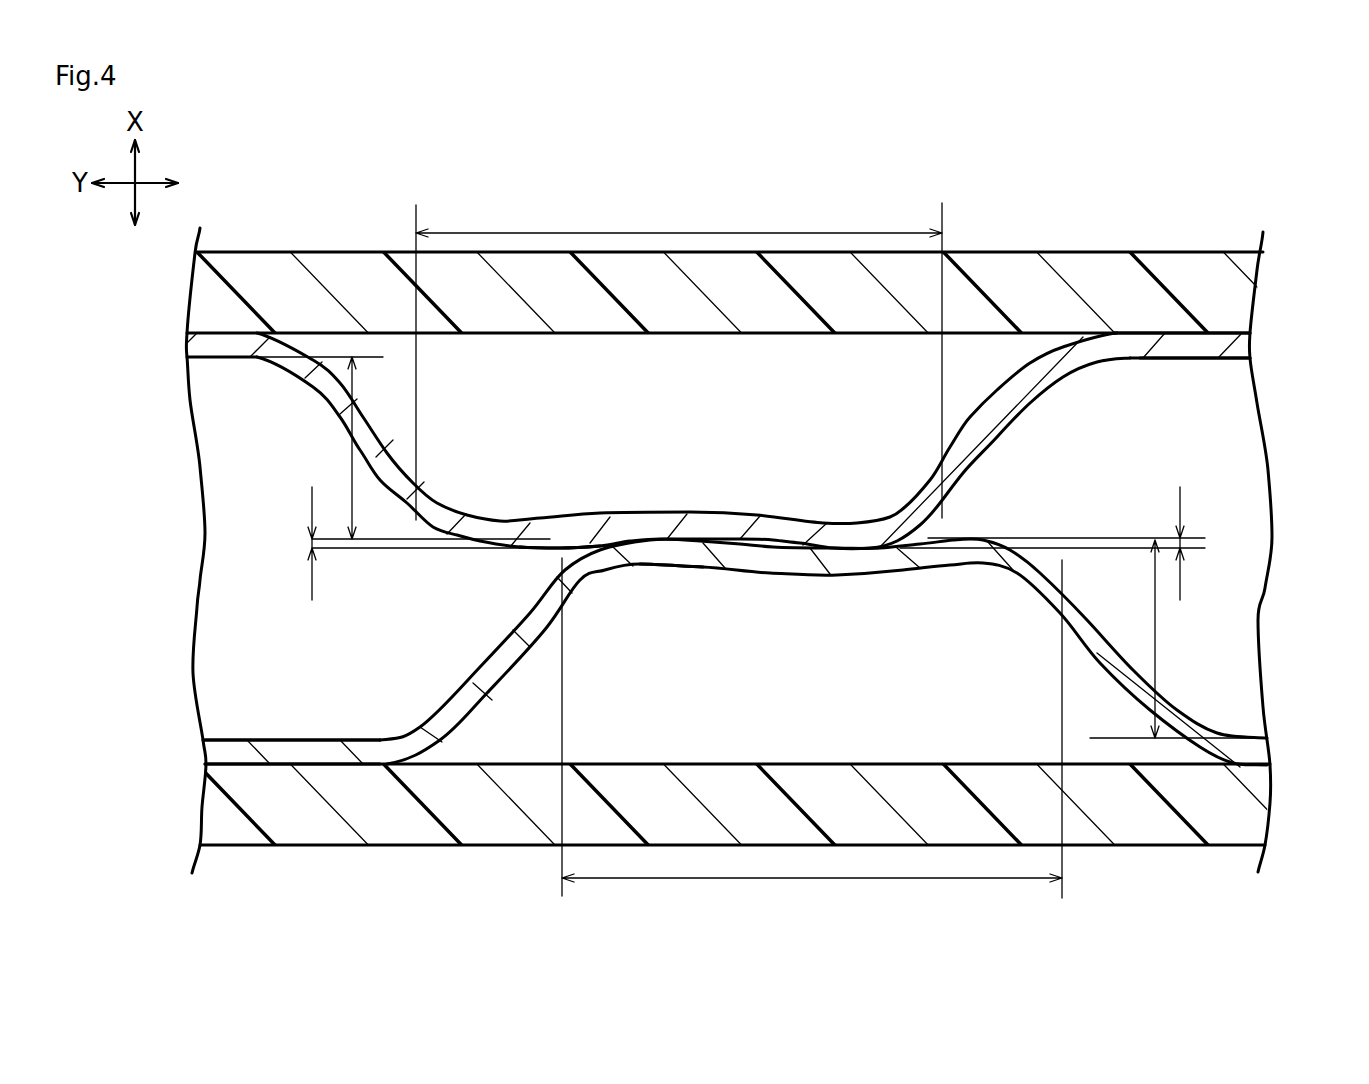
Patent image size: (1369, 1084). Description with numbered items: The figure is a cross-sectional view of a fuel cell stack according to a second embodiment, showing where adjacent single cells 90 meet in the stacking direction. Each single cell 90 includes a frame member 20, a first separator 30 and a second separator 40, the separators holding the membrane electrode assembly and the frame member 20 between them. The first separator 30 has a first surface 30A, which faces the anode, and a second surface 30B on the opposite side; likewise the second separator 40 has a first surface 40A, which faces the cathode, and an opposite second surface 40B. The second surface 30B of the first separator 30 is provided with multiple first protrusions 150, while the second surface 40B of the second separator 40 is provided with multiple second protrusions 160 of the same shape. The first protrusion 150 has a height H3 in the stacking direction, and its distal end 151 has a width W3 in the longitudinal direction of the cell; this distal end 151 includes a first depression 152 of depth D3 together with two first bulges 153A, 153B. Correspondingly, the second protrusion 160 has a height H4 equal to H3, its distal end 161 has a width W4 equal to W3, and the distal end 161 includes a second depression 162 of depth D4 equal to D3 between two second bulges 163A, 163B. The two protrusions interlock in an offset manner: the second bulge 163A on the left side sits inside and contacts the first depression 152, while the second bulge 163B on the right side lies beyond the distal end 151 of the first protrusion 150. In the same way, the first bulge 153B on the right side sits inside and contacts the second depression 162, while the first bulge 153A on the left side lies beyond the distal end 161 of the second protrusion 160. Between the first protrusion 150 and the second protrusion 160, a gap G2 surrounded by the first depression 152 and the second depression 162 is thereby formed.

The frame member 20 is at (1171, 240).
The first separator 30 is at (767, 356).
The first surface of first separator 30A is at (1251, 322).
The second surface of first separator 30B is at (1250, 372).
The second separator 40 is at (249, 771).
The first surface of second separator 40A is at (210, 766).
The second surface of second separator 40B is at (207, 738).
The single cell 90 is at (732, 545).
The first protrusion 150 is at (1007, 449).
The distal end of first protrusion 151 is at (873, 650).
The first depression 152 is at (697, 566).
The first bulge 153A is at (603, 568).
The first bulge 153B is at (863, 560).
The second protrusion 160 is at (481, 648).
The distal end of second protrusion 161 is at (893, 417).
The second depression 162 is at (790, 541).
The second bulge 163A is at (641, 540).
The second bulge 163B is at (973, 537).
The gap G2 is at (836, 550).
The width W3 is at (688, 231).
The width W4 is at (810, 890).
The height H3 is at (351, 453).
The height H4 is at (1157, 639).
The depth D3 is at (312, 544).
The depth D4 is at (1200, 545).